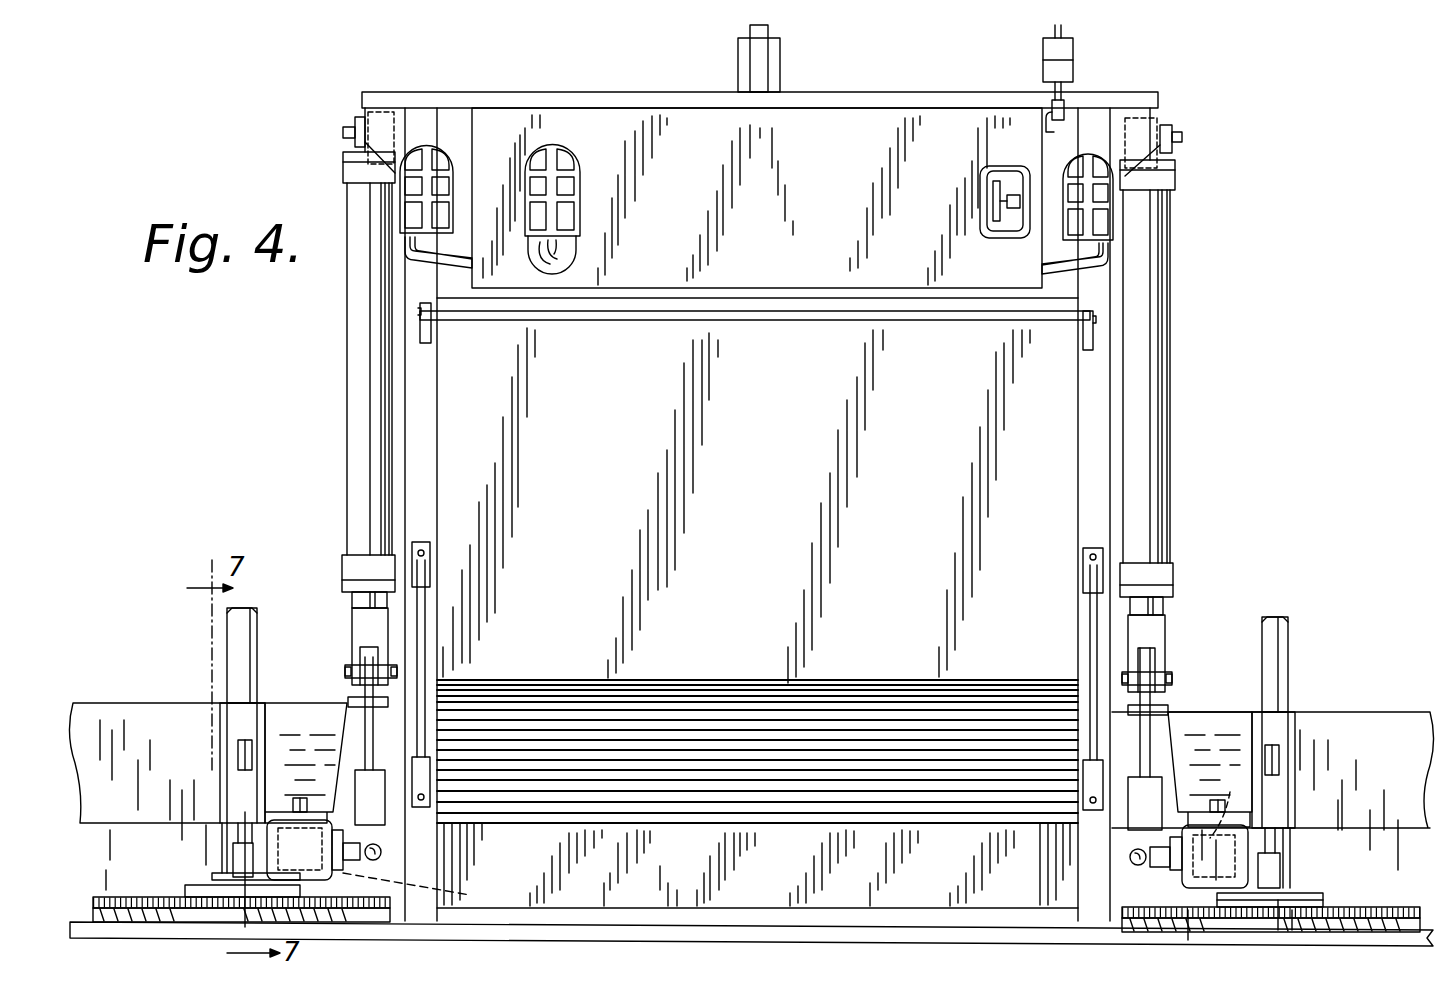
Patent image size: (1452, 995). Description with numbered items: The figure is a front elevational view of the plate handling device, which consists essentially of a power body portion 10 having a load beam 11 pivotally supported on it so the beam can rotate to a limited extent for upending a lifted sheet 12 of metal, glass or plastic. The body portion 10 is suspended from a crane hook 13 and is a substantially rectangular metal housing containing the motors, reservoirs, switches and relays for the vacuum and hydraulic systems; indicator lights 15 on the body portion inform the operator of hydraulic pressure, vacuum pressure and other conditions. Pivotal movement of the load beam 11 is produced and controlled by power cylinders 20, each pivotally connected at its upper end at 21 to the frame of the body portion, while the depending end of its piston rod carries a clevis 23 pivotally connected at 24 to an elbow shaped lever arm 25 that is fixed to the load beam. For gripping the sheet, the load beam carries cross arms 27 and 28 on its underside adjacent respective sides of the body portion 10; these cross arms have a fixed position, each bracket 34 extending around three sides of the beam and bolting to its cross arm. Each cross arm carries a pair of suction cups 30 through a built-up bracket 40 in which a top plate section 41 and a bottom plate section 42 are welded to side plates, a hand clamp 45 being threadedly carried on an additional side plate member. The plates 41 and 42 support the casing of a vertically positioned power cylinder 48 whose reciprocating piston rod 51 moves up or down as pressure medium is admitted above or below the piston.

The power body portion 10 is at (832, 457).
The load beam 11 is at (92, 715).
The lifted sheet 12 is at (870, 927).
The hook 13 is at (763, 60).
The indicator lights 15 is at (527, 160).
The power cylinder 20 is at (353, 373).
The pivotal connection 21 is at (347, 130).
The clevis 23 is at (363, 628).
The pivotal connection 24 is at (347, 672).
The elbow shaped lever arm 25 is at (372, 738).
The cross arm 27 is at (470, 895).
The cross arm 28 is at (1213, 801).
The suction cup 30 is at (1350, 908).
The bracket 34 is at (233, 685).
The built-up bracket 40 is at (337, 820).
The top plate section 41 is at (222, 812).
The bottom plate section 42 is at (222, 873).
The hand clamp 45 is at (381, 852).
The power cylinder 48 is at (233, 727).
The piston rod 51 is at (1277, 635).